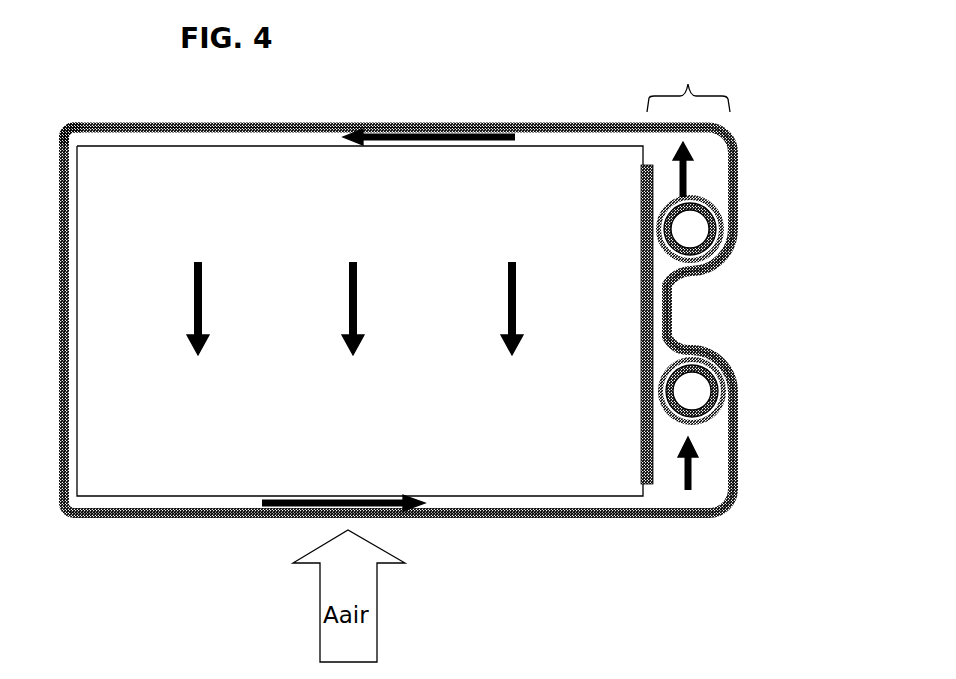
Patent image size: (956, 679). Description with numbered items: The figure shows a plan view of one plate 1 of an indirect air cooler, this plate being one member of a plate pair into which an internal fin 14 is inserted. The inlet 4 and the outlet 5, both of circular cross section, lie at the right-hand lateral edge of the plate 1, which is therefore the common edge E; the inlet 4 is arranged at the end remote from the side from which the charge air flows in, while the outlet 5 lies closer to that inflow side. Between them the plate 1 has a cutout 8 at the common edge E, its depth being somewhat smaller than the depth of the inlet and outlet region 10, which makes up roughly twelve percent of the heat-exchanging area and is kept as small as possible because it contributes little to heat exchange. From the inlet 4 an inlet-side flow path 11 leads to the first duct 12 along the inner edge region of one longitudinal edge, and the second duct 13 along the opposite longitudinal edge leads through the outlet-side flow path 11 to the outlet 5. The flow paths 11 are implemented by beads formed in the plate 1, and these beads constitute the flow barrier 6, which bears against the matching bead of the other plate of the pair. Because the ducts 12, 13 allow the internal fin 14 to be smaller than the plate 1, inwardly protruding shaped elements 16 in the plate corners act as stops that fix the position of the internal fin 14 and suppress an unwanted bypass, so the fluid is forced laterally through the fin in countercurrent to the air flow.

The plate 1 is at (244, 536).
The inlet 4 is at (702, 232).
The outlet 5 is at (695, 390).
The flow barrier 6 is at (640, 168).
The cutout 8 is at (682, 315).
The inlet and outlet region 10 is at (688, 84).
The flow path 11 is at (705, 178).
The first duct 12 is at (400, 136).
The second duct 13 is at (470, 502).
The internal fin 14 is at (383, 462).
The shaped element 16 is at (72, 137).
The common edge E is at (735, 198).